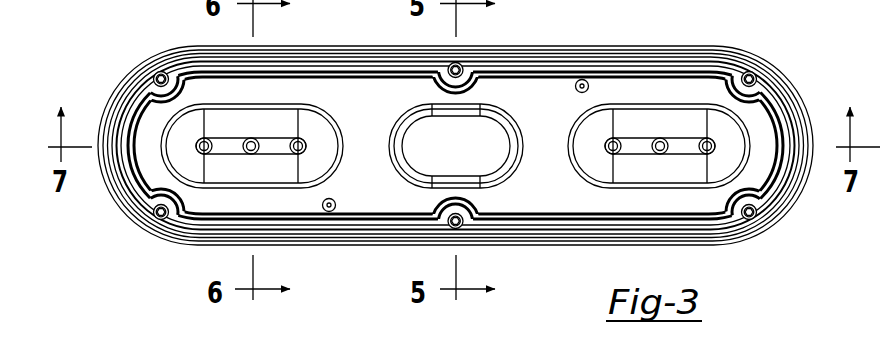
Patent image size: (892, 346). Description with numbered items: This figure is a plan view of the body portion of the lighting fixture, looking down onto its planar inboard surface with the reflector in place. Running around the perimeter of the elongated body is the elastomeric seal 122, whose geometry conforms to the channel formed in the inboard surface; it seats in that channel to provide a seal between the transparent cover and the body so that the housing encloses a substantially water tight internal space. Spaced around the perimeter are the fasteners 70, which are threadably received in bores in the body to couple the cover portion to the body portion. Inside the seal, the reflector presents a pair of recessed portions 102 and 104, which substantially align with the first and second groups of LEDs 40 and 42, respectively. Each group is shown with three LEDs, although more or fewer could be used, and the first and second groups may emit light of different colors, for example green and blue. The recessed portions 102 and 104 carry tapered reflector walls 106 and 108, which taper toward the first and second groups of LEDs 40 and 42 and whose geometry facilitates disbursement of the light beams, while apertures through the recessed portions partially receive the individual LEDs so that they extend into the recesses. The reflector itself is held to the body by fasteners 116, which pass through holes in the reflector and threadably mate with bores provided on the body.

The first group of LEDs 40 is at (245, 168).
The second group of LEDs 42 is at (660, 168).
The fasteners 70 is at (757, 77).
The recessed portion 102 is at (309, 133).
The recessed portion 104 is at (604, 133).
The tapered reflector wall 106 is at (327, 153).
The tapered reflector wall 108 is at (572, 150).
The fasteners 116 is at (581, 84).
The elastomeric seal 122 is at (262, 70).